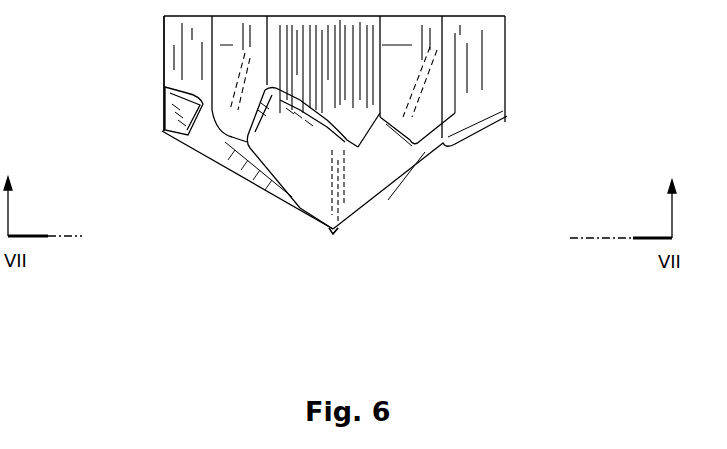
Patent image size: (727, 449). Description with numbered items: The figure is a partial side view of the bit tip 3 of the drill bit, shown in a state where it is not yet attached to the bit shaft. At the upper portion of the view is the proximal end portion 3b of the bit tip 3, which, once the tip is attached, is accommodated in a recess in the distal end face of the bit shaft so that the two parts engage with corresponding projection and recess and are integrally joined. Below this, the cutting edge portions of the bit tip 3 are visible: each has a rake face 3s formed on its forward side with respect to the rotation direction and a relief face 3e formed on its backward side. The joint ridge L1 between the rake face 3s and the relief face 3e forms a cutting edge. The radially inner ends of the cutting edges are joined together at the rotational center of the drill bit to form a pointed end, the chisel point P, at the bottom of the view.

The bit tip 3 is at (508, 57).
The proximal end portion 3b is at (164, 52).
The relief face 3e is at (278, 170).
The rake face 3s is at (366, 166).
The joint ridge L1 is at (300, 162).
The chisel point P is at (333, 232).